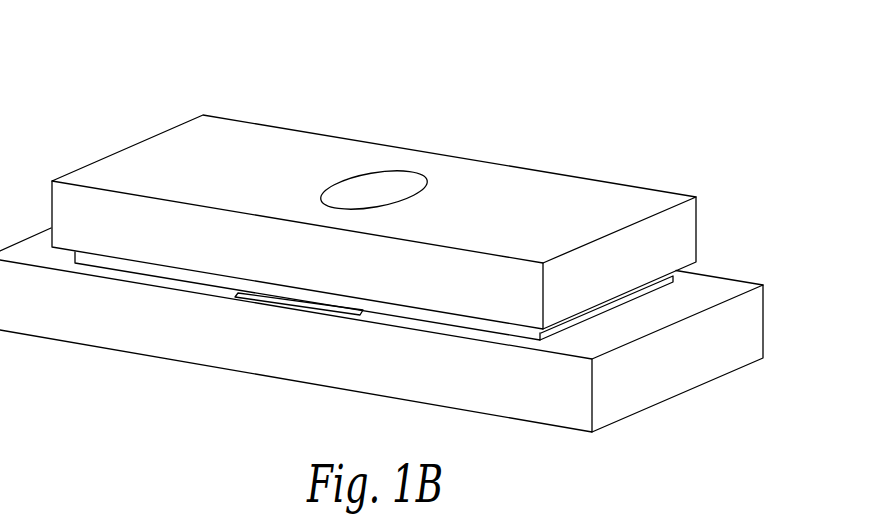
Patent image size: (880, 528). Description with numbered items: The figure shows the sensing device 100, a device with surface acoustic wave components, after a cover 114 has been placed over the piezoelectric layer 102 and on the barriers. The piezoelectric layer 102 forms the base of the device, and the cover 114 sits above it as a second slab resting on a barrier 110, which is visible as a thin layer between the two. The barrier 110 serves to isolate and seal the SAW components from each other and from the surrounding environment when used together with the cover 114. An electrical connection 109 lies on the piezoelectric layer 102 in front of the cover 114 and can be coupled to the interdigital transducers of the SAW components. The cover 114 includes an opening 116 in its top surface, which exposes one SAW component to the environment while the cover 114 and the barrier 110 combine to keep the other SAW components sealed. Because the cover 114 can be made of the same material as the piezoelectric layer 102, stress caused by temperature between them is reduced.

The sensing device 100 is at (383, 229).
The piezoelectric layer 102 is at (620, 395).
The electrical connection 109 is at (298, 303).
The barrier 110 is at (673, 278).
The cover 114 is at (530, 192).
The opening 116 is at (377, 192).